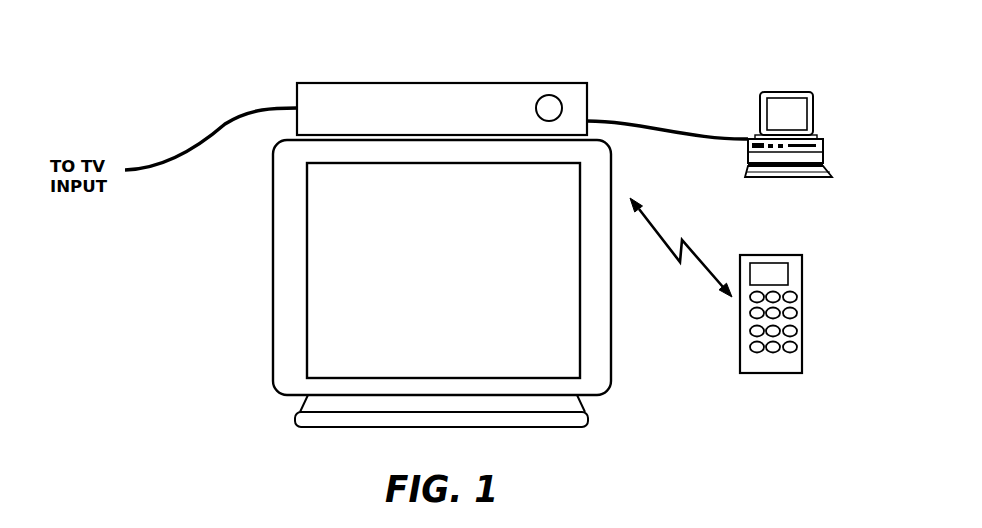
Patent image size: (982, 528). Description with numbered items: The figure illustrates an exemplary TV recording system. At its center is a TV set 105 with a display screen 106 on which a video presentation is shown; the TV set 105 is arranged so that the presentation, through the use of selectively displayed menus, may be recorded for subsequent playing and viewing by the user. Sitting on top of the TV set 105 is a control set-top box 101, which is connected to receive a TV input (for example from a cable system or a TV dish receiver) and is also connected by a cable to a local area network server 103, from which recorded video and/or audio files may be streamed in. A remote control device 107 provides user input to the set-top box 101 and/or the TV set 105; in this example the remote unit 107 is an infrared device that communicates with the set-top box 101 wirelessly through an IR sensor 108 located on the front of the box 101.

The set-top box 101 is at (316, 78).
The local area network (LAN) server 103 is at (783, 92).
The TV set 105 is at (270, 255).
The television screen / display 106 is at (303, 295).
The remote control device 107 is at (803, 335).
The IR sensor 108 is at (543, 94).